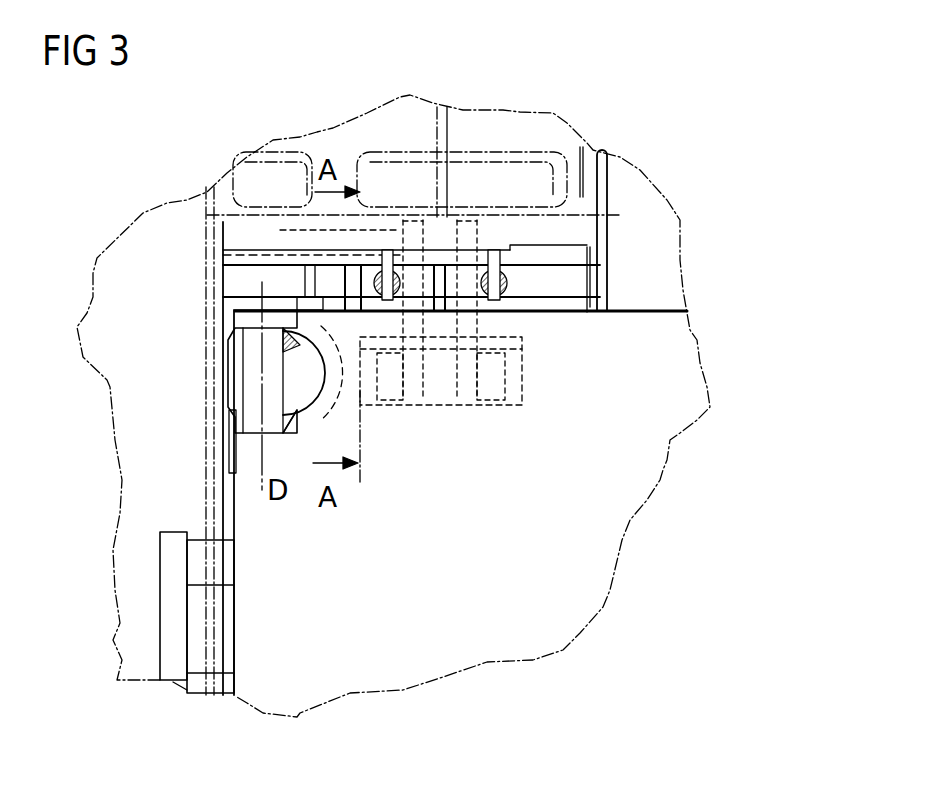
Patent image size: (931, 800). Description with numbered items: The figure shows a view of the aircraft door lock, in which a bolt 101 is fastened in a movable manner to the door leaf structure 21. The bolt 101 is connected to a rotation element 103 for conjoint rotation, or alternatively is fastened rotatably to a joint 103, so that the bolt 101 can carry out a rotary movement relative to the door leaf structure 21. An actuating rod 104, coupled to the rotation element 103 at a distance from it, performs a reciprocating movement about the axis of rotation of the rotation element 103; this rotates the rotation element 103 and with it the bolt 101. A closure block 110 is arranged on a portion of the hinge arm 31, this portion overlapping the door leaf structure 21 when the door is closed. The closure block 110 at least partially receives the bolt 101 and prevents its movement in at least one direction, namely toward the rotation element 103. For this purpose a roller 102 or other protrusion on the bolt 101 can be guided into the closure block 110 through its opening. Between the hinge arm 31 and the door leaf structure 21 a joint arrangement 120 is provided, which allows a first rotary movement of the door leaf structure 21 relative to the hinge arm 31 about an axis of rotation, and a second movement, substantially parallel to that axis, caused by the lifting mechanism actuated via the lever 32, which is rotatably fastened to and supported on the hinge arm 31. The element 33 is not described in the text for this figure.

The door leaf structure 21 is at (205, 330).
The hinge arm 31 is at (653, 313).
The lever 32 is at (170, 573).
The upper mounting plate 33 is at (250, 263).
The bolt 101 is at (470, 320).
The roller 102 is at (390, 390).
The rotation element 103 is at (307, 244).
The actuating rod 104 is at (513, 283).
The closure block 110 is at (522, 368).
The joint arrangement 120 is at (213, 367).